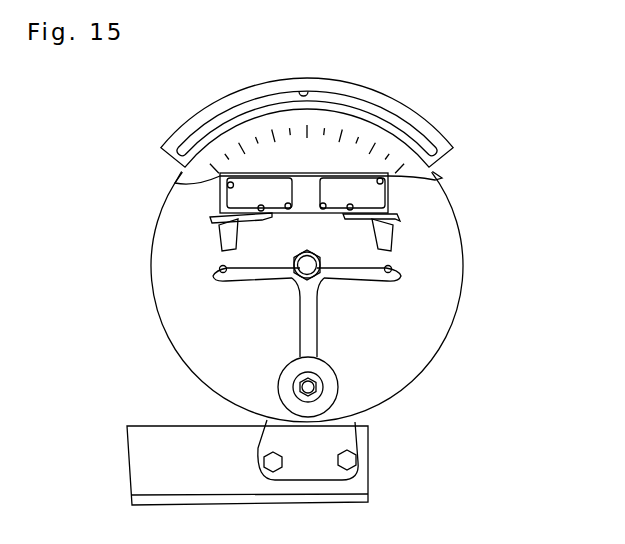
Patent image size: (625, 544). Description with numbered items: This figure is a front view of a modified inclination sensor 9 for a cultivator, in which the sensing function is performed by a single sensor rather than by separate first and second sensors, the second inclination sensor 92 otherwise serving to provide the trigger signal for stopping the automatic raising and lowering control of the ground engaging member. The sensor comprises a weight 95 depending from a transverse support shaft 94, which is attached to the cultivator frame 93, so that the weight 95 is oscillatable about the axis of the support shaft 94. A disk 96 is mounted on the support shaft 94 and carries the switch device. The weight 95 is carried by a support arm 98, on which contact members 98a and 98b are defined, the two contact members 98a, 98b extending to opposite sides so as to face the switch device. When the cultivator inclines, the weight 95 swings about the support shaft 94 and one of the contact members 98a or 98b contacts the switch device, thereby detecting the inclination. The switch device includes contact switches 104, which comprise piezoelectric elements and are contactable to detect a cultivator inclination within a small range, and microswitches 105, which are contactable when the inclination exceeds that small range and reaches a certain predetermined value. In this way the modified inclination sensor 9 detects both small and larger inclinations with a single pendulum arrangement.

The inclination sensor 9 is at (181, 109).
The disk 96 is at (172, 190).
The second inclination sensor 92 is at (247, 379).
The microswitches 105 is at (222, 211).
The contact switches 104 is at (219, 240).
The contact member 98a is at (228, 283).
The contact member 98b is at (392, 278).
The support arm 98 is at (312, 300).
The transverse support shaft 94 is at (290, 282).
The weight 95 is at (333, 385).
The cultivator frame 93 is at (353, 447).